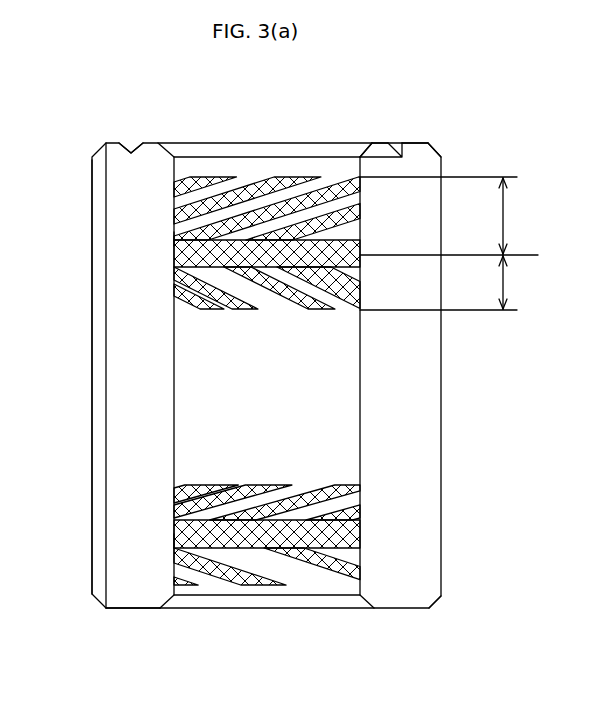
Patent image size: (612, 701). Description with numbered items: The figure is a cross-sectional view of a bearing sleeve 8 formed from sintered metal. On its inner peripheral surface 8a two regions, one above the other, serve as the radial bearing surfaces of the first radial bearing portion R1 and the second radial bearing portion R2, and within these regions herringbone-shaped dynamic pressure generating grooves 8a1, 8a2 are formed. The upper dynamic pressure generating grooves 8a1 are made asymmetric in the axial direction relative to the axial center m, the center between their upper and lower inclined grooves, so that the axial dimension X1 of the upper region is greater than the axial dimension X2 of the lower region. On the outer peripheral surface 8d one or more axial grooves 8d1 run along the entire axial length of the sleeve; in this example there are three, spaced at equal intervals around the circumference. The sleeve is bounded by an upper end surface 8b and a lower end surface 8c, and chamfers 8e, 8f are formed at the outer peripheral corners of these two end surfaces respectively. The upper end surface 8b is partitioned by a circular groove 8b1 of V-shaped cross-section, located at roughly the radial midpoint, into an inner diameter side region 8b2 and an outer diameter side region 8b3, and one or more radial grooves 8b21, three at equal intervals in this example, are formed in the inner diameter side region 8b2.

The bearing sleeve 8 is at (82, 153).
The inner peripheral surface 8a is at (329, 353).
The upper dynamic pressure generating grooves 8a1 is at (218, 188).
The lower dynamic pressure generating grooves 8a2 is at (240, 487).
The upper end surface 8b is at (152, 142).
The circular groove 8b1 is at (396, 150).
The inner diameter side region 8b2 is at (380, 143).
The radial grooves 8b21 is at (366, 148).
The outer diameter side region 8b3 is at (424, 143).
The lower end surface 8c is at (141, 610).
The outer peripheral surface 8d is at (92, 343).
The axial grooves 8d1 is at (106, 373).
The chamfer 8e is at (436, 150).
The chamfer 8f is at (438, 600).
The first radial bearing portion R1 is at (170, 238).
The second radial bearing portion R2 is at (170, 541).
The axial dimension of the upper region X1 is at (449, 216).
The axial dimension of the lower region X2 is at (449, 282).
The axial center m is at (463, 258).